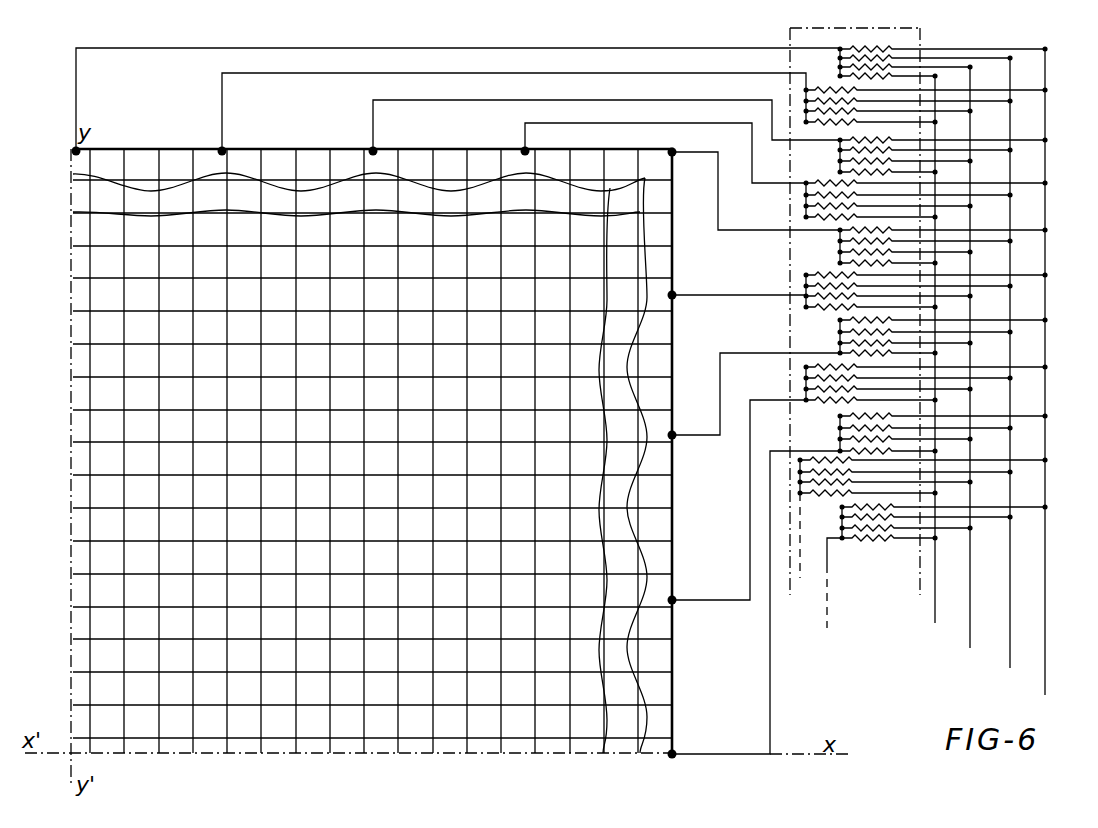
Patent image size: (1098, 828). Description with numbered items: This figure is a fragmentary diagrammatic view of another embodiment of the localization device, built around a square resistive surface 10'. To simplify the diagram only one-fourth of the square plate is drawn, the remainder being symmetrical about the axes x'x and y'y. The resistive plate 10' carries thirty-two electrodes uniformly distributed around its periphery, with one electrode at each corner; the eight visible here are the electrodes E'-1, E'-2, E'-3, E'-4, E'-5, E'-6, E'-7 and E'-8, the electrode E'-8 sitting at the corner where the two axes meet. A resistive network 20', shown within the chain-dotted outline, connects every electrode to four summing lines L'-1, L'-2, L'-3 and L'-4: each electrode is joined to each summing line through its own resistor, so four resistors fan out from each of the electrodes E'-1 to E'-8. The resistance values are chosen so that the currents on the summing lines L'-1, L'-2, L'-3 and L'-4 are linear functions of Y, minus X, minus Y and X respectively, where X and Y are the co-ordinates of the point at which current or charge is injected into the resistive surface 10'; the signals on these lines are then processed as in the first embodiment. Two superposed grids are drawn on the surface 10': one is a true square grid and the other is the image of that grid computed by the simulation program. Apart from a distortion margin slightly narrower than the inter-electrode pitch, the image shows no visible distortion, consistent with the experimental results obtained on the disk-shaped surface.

The resistive surface 10' is at (399, 452).
The resistive network 20' is at (872, 320).
The electrode E'-1 is at (737, 502).
The electrode E'-2 is at (754, 409).
The electrode E'-3 is at (737, 287).
The electrode E'-4 is at (754, 179).
The electrode E'-5 is at (664, 153).
The electrode E'-6 is at (605, 128).
The electrode E'-7 is at (512, 114).
The electrode E'-8 is at (456, 102).
The summing line L'-1 is at (951, 349).
The summing line L'-2 is at (987, 357).
The summing line L'-3 is at (1026, 363).
The summing line L'-4 is at (1062, 372).